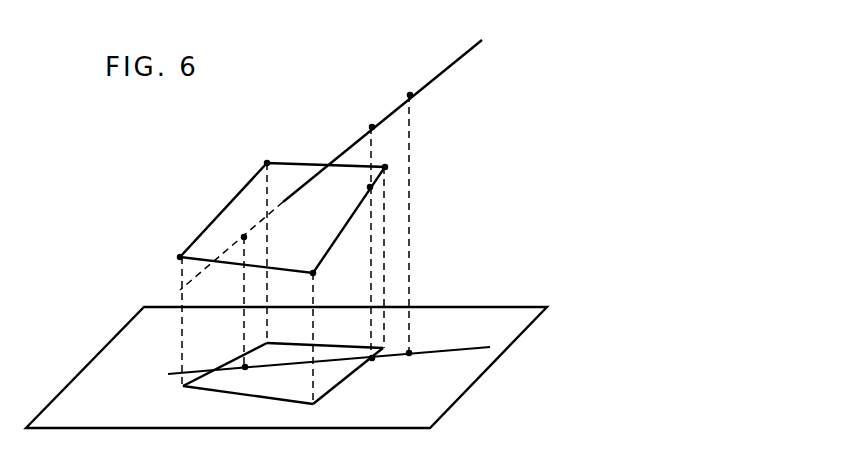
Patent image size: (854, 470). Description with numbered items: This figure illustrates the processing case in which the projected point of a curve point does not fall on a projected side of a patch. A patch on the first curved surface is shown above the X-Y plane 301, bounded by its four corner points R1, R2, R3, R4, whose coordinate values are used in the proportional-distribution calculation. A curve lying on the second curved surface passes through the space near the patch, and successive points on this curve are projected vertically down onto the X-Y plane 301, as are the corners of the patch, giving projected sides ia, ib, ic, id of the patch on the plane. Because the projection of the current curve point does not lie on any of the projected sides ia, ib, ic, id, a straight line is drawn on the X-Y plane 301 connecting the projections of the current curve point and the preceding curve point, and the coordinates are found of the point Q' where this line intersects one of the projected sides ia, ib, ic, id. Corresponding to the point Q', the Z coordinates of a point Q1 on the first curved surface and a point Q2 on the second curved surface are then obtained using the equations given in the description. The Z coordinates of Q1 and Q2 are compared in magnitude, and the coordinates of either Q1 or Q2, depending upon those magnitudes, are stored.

The X-Y plane 301 is at (520, 316).
The projected side ia is at (233, 356).
The projected side ib is at (347, 373).
The projected side ic is at (325, 345).
The projected side id is at (232, 391).
The corner point R1 is at (172, 253).
The corner point R2 is at (259, 154).
The corner point R3 is at (323, 280).
The corner point R4 is at (388, 159).
The point on first curved surface Q1 is at (355, 188).
The point on second curved surface Q2 is at (365, 115).
The intersection point Q' is at (377, 369).